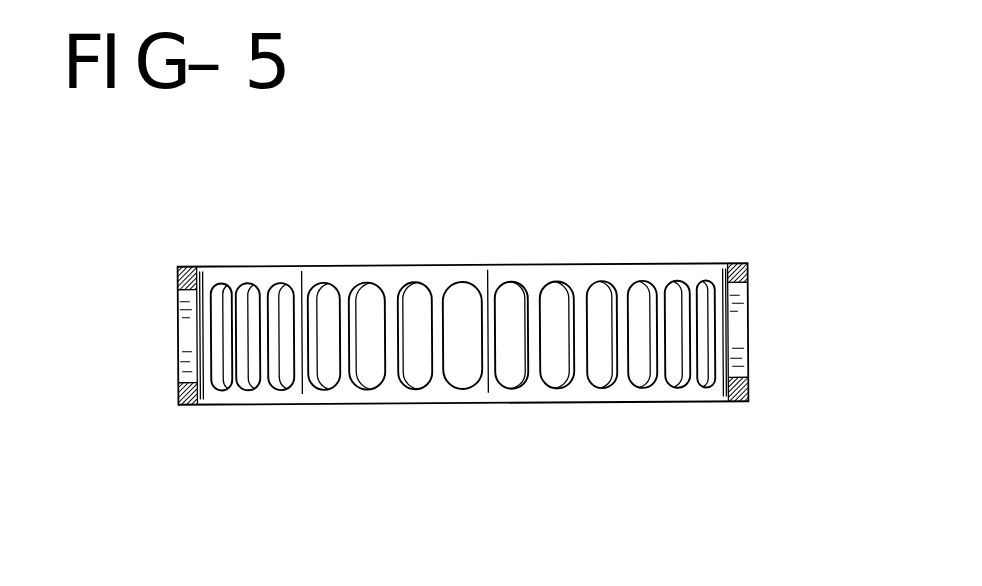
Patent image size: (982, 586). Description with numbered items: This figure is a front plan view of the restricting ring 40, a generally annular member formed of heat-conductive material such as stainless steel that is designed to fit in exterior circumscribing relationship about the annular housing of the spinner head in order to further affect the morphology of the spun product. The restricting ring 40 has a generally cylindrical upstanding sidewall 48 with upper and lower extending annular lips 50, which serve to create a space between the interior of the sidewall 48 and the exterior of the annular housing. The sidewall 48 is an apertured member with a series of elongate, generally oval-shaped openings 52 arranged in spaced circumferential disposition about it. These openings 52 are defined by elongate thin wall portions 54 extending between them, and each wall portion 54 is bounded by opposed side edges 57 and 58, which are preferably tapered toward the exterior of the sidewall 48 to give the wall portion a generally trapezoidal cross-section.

The restricting ring 40 is at (575, 218).
The sidewall 48 is at (722, 337).
The annular lips 50 is at (183, 265).
The openings 52 is at (417, 372).
The wall portions 54 is at (535, 347).
The side edge 57 is at (313, 345).
The side edge 58 is at (680, 343).